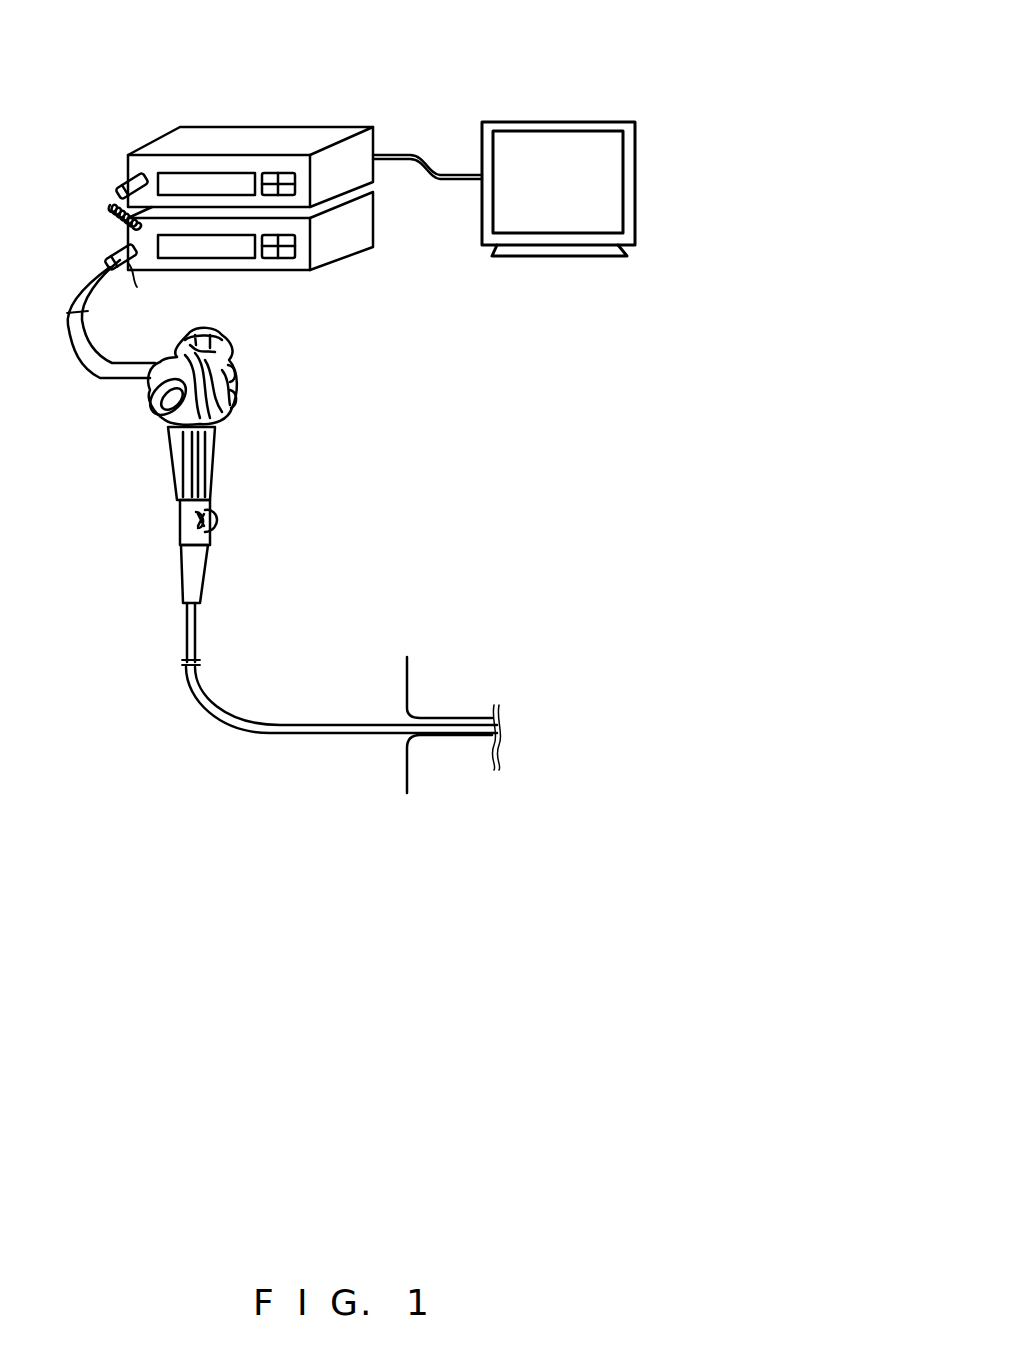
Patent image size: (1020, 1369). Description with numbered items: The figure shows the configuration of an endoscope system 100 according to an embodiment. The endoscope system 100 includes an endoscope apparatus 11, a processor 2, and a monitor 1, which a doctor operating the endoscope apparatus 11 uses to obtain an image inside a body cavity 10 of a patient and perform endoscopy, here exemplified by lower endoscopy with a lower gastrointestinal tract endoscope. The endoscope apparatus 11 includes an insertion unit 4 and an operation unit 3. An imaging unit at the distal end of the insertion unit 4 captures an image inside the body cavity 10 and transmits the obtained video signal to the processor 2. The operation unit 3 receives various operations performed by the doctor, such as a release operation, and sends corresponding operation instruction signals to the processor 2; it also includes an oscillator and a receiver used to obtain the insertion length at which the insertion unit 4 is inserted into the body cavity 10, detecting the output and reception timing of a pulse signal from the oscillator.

The endoscope system 100 is at (352, 401).
The monitor 1 is at (567, 124).
The processor 2 is at (367, 226).
The operation unit 3 is at (152, 418).
The insertion unit 4 is at (232, 711).
The body cavity 10 is at (473, 687).
The endoscope apparatus 11 is at (282, 452).